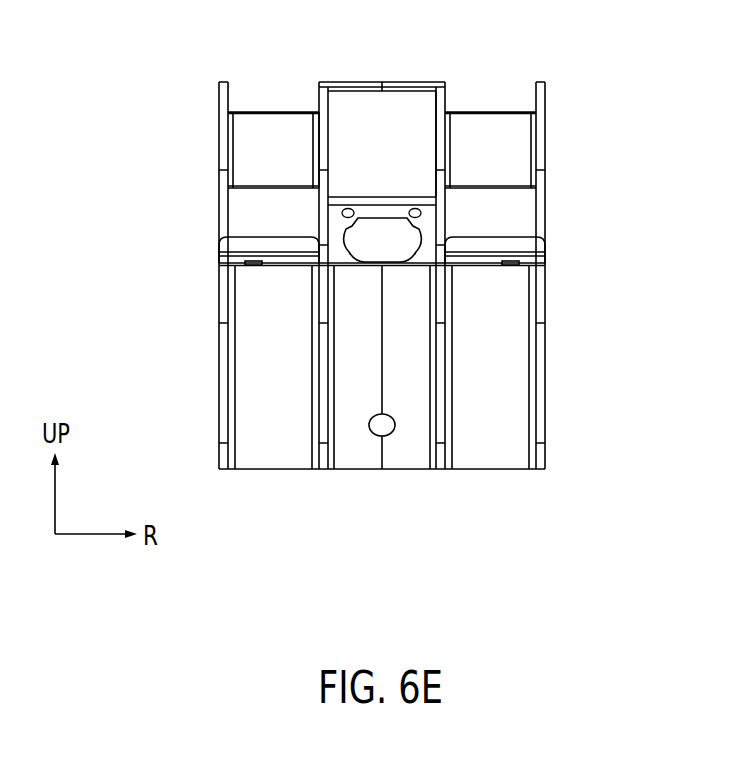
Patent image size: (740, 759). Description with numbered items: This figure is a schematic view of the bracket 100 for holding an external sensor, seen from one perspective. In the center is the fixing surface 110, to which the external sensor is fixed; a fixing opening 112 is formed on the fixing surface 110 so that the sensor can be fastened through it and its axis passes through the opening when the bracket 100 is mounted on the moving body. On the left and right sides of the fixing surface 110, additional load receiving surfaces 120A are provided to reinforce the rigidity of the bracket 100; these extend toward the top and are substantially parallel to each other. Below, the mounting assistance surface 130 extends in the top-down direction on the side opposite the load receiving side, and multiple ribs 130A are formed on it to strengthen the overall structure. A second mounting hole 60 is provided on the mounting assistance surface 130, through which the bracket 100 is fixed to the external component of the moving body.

The bracket 100 is at (648, 542).
The fixing surface 110 is at (370, 210).
The fixing opening 112 is at (390, 243).
The load receiving surfaces 120A is at (225, 133).
The mounting assistance surface 130 is at (502, 437).
The ribs 130A is at (223, 385).
The second mounting hole 60 is at (385, 423).